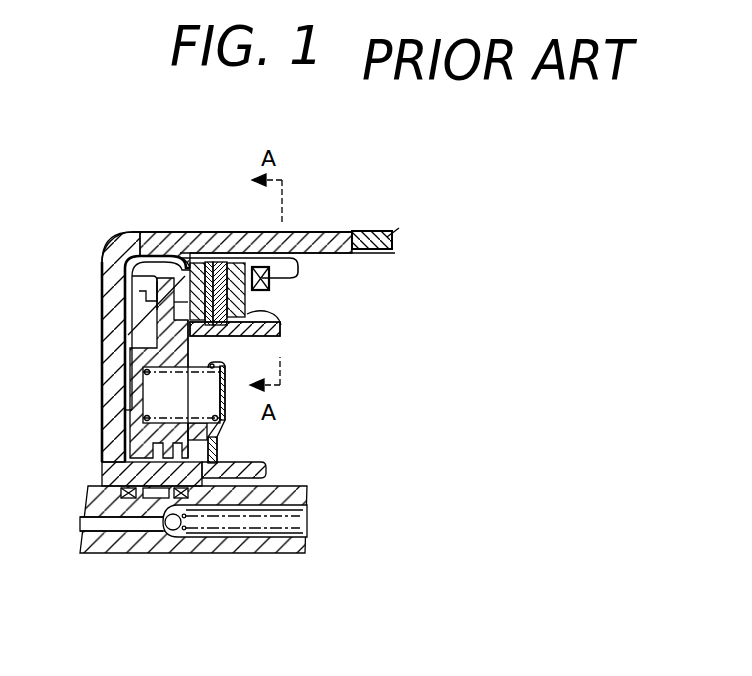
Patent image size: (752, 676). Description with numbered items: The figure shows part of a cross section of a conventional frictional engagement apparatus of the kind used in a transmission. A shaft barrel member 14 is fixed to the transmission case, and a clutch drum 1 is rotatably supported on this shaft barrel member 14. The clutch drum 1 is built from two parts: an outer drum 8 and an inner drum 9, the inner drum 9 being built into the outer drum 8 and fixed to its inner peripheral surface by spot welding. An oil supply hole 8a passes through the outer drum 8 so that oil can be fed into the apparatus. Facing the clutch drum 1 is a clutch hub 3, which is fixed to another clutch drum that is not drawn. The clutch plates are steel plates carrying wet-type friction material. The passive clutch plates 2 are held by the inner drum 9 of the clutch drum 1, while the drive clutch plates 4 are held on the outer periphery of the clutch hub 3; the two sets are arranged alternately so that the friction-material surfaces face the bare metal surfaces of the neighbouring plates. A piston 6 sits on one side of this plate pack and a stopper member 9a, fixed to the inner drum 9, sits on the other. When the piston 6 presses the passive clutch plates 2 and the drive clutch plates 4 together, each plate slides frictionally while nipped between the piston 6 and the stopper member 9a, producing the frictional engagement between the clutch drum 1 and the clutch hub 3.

The clutch drum 1 is at (115, 219).
The passive clutch plates 2 is at (213, 248).
The clutch hub 3 is at (272, 328).
The drive clutch plates 4 is at (213, 324).
The piston 6 is at (130, 376).
The outer drum 8 is at (177, 247).
The oil supply hole 8a is at (244, 250).
The inner drum 9 is at (262, 252).
The stopper member 9a is at (271, 325).
The shaft barrel member 14 is at (117, 553).